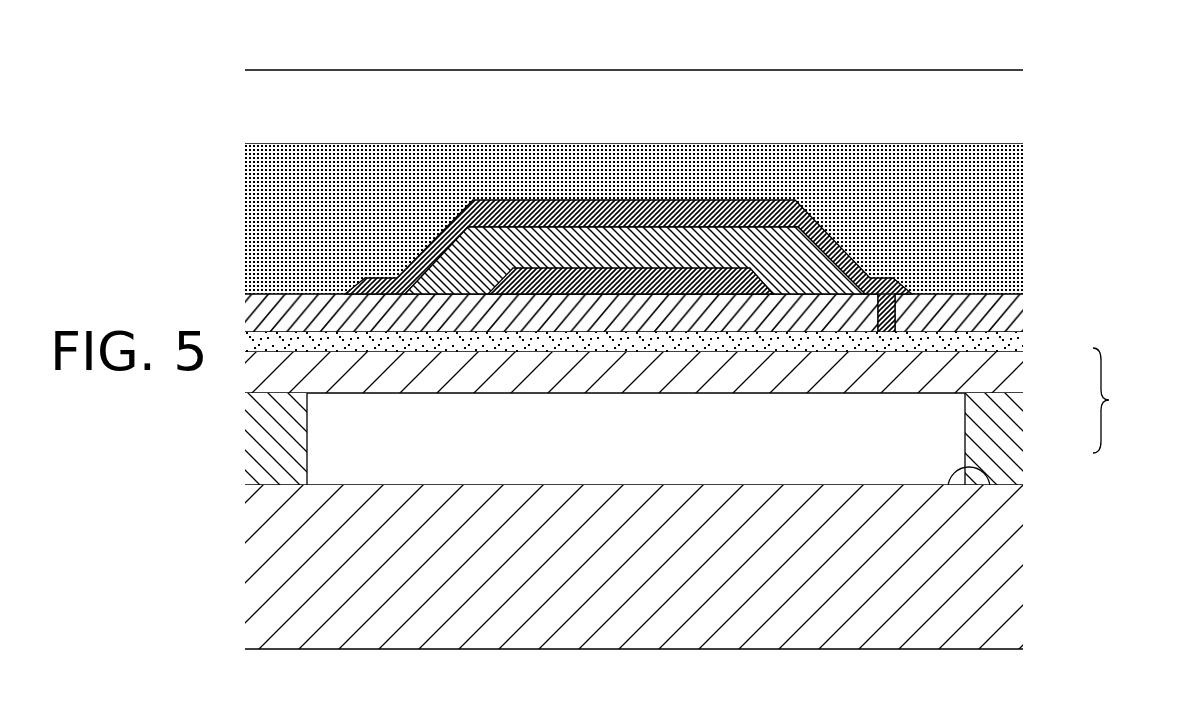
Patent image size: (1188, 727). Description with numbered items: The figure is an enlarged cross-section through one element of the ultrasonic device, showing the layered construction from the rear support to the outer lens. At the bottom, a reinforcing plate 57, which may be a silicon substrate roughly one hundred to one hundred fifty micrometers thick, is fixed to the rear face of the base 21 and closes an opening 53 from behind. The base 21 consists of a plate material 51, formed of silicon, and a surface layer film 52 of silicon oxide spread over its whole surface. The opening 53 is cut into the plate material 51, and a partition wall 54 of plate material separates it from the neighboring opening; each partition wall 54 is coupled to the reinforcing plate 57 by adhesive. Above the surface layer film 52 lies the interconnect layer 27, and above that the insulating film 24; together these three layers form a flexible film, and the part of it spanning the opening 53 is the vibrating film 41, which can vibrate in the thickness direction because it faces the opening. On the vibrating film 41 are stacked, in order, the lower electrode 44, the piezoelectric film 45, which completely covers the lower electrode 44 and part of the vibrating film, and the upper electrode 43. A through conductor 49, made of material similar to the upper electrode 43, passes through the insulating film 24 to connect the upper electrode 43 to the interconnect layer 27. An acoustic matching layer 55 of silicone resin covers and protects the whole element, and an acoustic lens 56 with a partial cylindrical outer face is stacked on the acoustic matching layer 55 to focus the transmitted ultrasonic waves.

The base 21 is at (1121, 400).
The insulating film 24 is at (1012, 311).
The interconnect layer 27 is at (1033, 341).
The vibrating film 41 is at (578, 394).
The upper electrode 43 is at (745, 212).
The lower electrode 44 is at (765, 278).
The piezoelectric film 45 is at (462, 246).
The through conductor 49 is at (897, 312).
The plate material 51 is at (1025, 439).
The surface layer film 52 is at (1013, 373).
The opening 53 is at (995, 505).
The partition wall 54 is at (307, 440).
The acoustic matching layer 55 is at (1012, 192).
The acoustic lens 56 is at (1010, 106).
The reinforcing plate 57 is at (1013, 579).